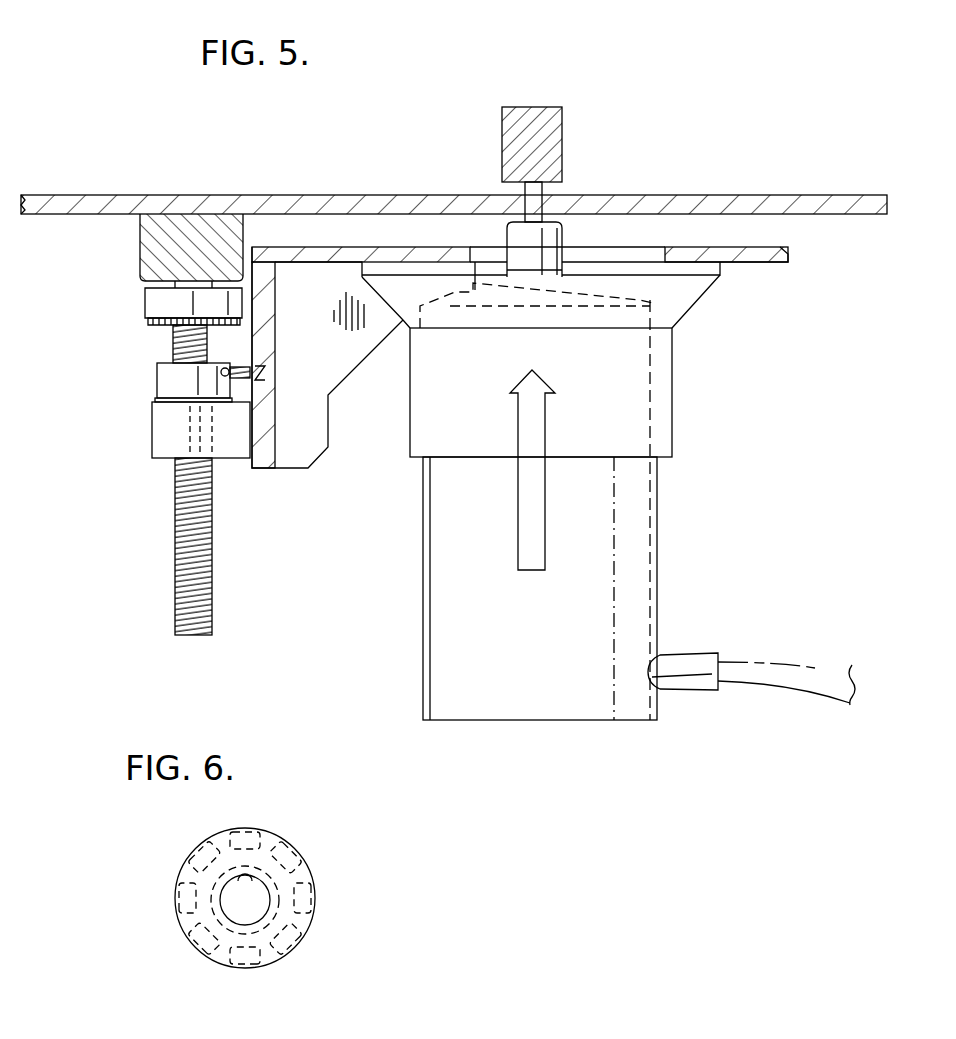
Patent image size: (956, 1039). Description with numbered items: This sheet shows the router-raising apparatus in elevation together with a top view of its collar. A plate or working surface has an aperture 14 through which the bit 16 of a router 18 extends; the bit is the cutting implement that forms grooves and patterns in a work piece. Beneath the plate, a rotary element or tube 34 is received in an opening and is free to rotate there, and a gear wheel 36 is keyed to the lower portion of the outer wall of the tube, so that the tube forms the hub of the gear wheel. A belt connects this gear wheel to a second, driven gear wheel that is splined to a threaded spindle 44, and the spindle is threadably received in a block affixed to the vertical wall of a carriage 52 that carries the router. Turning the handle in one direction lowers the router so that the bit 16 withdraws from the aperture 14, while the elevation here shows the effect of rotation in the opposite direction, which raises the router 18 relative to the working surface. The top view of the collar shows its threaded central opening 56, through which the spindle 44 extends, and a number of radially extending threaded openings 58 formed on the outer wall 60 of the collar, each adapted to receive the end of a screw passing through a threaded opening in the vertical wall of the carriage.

In FIG. 5, the aperture 14 is at (567, 203).
In FIG. 5, the bit 16 is at (543, 107).
In FIG. 5, the router 18 is at (423, 588).
In FIG. 5, the rotary element or tube 34 is at (142, 230).
In FIG. 5, the gear wheel 36 is at (146, 298).
In FIG. 5, the threaded spindle 44 is at (176, 497).
In FIG. 5, the carriage 52 is at (340, 247).
In FIG. 6, the threaded central opening 56 is at (252, 884).
In FIG. 6, the radially extending threaded openings 58 is at (322, 945).
In FIG. 6, the outer wall 60 is at (181, 918).